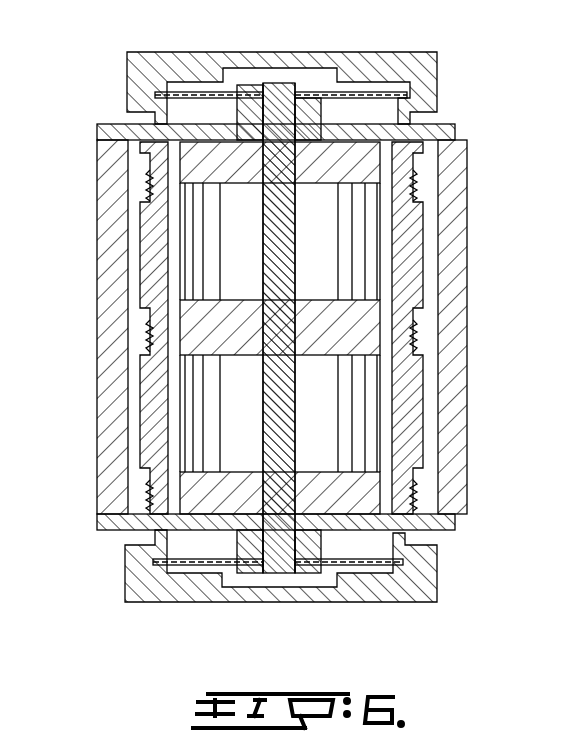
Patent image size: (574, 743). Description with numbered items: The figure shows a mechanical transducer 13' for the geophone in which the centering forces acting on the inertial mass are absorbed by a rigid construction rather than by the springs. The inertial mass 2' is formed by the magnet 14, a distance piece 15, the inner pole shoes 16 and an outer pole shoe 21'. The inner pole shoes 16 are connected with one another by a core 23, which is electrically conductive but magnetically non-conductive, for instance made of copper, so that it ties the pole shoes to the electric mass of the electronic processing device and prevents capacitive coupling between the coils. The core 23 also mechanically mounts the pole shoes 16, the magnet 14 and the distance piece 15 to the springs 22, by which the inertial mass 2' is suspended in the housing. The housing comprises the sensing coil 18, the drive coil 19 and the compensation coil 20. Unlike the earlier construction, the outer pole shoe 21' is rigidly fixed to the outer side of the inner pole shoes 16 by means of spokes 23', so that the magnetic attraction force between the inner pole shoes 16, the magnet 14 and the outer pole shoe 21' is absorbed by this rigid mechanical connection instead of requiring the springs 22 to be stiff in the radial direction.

The inertial mass 2' is at (106, 328).
The mechanical transducer 13' is at (282, 66).
The magnet 14 is at (210, 255).
The distance piece 15 is at (210, 445).
The inner pole shoes 16 is at (375, 158).
The sensing coil 18 is at (140, 185).
The drive coil 19 is at (140, 330).
The compensation coil 20 is at (140, 480).
The outer pole shoe 21' is at (309, 327).
The springs 22 is at (325, 93).
The core 23 is at (389, 328).
The spokes 23' is at (308, 323).